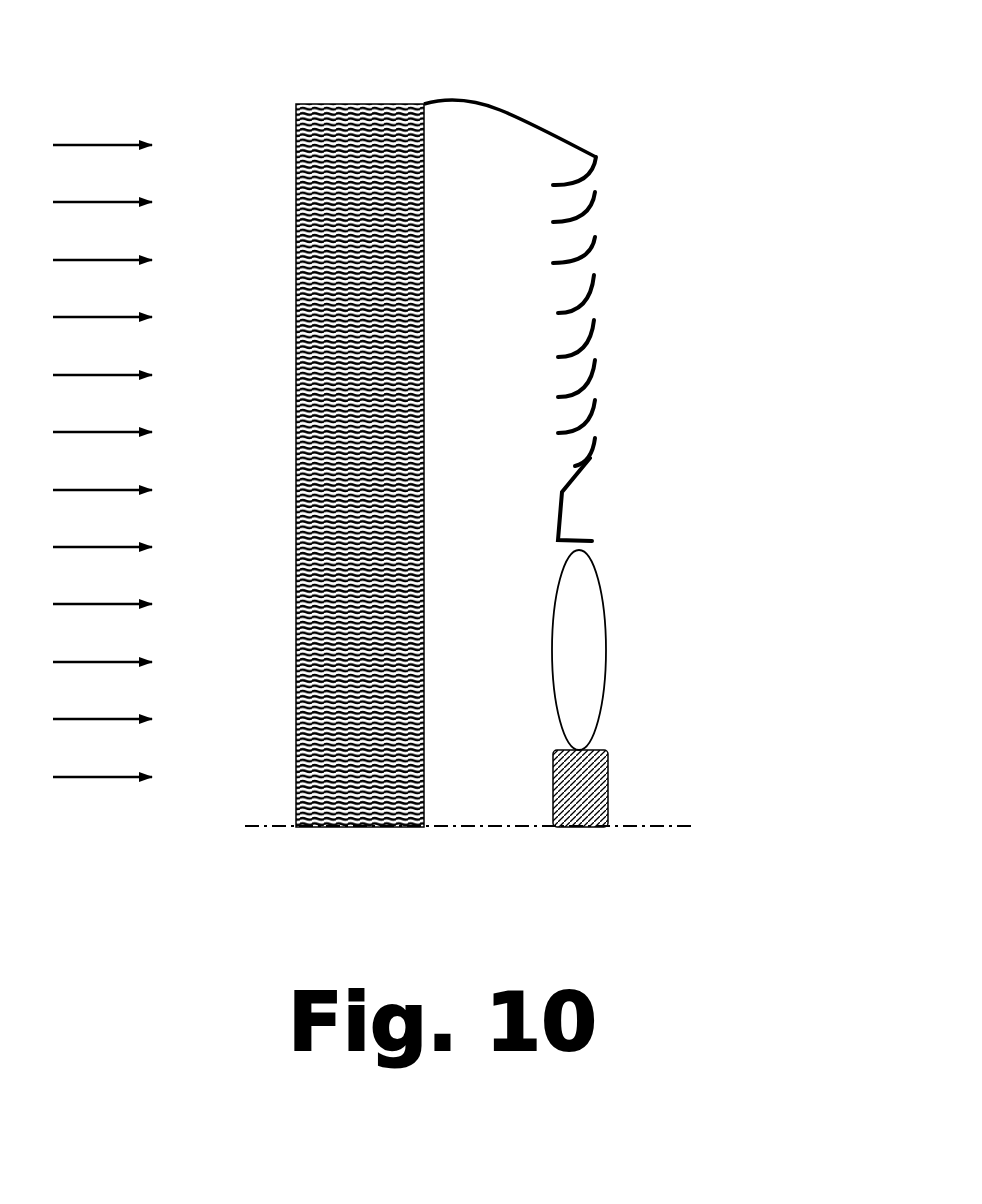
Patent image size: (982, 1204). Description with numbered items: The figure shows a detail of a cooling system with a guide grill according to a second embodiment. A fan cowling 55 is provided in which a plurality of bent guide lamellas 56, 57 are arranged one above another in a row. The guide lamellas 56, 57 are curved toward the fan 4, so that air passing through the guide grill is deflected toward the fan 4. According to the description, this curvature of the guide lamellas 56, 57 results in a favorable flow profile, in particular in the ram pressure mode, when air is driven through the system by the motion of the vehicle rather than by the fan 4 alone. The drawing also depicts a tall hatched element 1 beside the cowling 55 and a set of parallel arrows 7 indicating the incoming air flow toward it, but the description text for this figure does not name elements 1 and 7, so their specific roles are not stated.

The solar cell / absorber plate 1 is at (297, 745).
The fan 4 is at (578, 725).
The incident radiation 7 is at (100, 818).
The fan cowling 55 is at (528, 120).
The guide lamella 56 is at (590, 258).
The guide lamella 57 is at (590, 292).